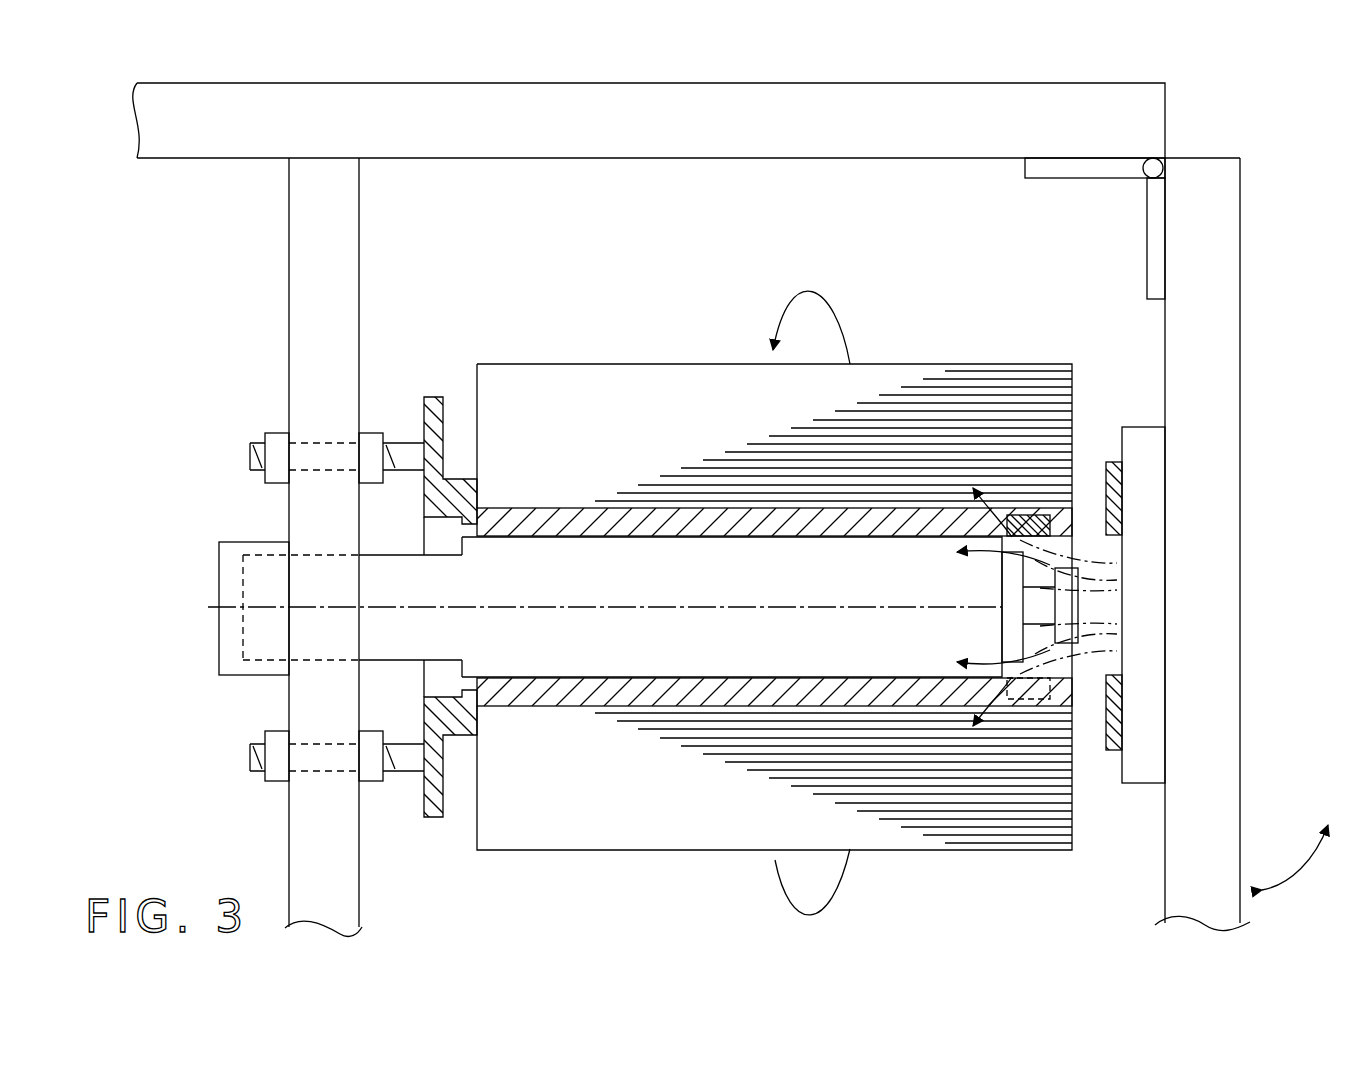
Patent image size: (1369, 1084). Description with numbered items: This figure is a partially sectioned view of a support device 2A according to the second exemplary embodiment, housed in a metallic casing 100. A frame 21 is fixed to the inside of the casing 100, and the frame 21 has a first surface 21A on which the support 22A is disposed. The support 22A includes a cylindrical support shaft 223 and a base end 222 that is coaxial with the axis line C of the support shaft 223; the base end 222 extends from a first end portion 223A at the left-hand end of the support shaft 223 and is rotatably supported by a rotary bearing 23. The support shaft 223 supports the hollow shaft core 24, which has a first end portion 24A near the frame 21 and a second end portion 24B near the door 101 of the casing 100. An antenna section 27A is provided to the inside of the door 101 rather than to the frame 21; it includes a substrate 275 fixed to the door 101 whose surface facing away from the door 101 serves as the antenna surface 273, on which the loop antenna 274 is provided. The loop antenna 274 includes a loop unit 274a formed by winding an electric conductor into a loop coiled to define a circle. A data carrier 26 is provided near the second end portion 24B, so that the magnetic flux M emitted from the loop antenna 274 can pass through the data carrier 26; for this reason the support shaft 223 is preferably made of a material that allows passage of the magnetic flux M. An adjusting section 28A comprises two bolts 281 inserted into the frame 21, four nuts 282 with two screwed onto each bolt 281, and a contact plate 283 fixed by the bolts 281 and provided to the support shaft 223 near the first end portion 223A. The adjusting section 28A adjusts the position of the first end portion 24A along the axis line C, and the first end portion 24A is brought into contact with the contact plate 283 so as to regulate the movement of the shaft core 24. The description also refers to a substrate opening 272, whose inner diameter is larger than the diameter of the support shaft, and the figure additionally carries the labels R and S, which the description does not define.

The casing 100 is at (1237, 129).
The door 101 is at (1217, 355).
The support device 2A is at (241, 210).
The frame 21 is at (358, 197).
The first surface 21A is at (362, 297).
The support 22A is at (1078, 543).
The rotary bearing 23 is at (245, 542).
The shaft core 24 is at (777, 528).
The first end portion 24A is at (464, 676).
The second end portion 24B is at (1073, 690).
The data carrier 26 is at (1035, 515).
The antenna section 27A is at (1142, 427).
The adjusting section 28A is at (375, 410).
The base end 222 is at (388, 553).
The support shaft 223 is at (703, 555).
The first end portion 223A is at (460, 598).
The substrate opening 272 is at (433, 692).
The antenna surface 273 is at (1123, 553).
The loop antenna 274 is at (1113, 758).
The loop unit 274a is at (1123, 700).
The substrate 275 is at (1150, 457).
The bolt 281 is at (406, 443).
The nut 282 is at (373, 433).
The contact plate 283 is at (463, 728).
The rotation direction R is at (642, 345).
The sheet S is at (962, 368).
The magnetic flux M is at (1122, 575).
The axis line C is at (800, 612).